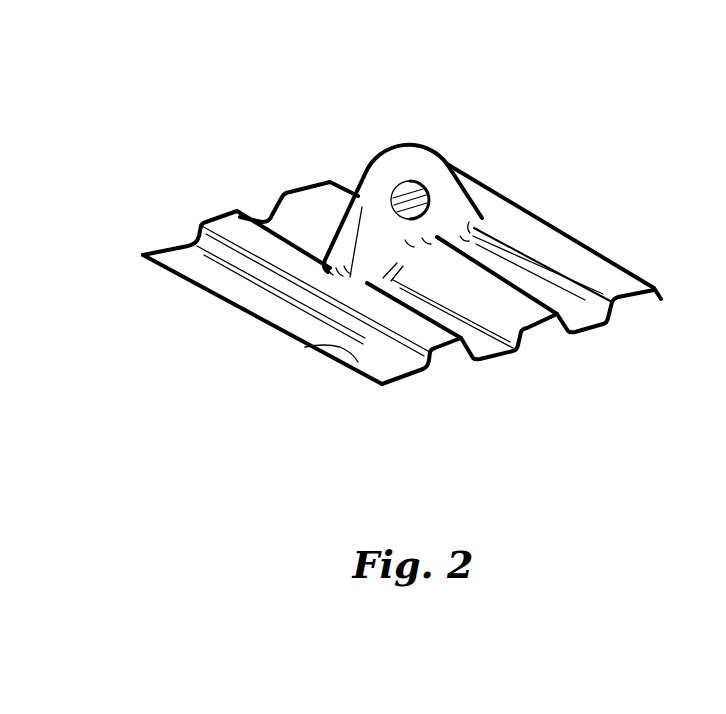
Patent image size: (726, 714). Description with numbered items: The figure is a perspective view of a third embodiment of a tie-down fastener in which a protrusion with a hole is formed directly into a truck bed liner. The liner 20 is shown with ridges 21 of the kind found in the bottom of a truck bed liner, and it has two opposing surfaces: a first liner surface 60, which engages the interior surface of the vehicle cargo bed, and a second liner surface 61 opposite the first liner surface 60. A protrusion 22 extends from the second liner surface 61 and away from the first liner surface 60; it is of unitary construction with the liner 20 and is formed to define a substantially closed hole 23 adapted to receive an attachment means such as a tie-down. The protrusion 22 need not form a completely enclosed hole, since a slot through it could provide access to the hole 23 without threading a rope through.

The liner 20 is at (403, 251).
The ridges 21 is at (237, 232).
The protrusion 22 is at (430, 162).
The hole 23 is at (418, 182).
The first liner surface 60 is at (461, 345).
The second liner surface 61 is at (307, 347).